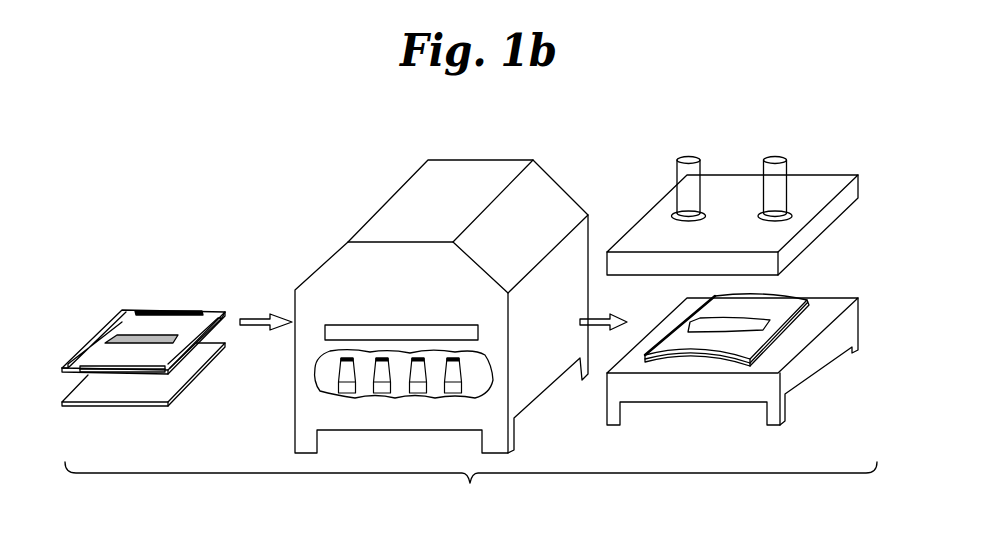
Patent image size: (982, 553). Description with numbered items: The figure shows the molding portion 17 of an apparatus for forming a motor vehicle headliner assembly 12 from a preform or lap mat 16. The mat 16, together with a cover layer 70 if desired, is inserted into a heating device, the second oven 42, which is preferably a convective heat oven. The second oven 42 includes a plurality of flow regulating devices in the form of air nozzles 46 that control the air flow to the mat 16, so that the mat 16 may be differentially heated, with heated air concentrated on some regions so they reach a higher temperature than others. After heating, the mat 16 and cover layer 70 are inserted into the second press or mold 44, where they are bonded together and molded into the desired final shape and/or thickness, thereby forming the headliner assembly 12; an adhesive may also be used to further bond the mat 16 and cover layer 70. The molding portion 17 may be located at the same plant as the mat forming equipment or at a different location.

The headliner assembly 12 is at (805, 297).
The lap mat 16 is at (157, 312).
The molding portion 17 is at (471, 491).
The second oven 42 is at (330, 261).
The second mold 44 is at (864, 182).
The air nozzles 46 is at (337, 387).
The cover layer 70 is at (122, 401).